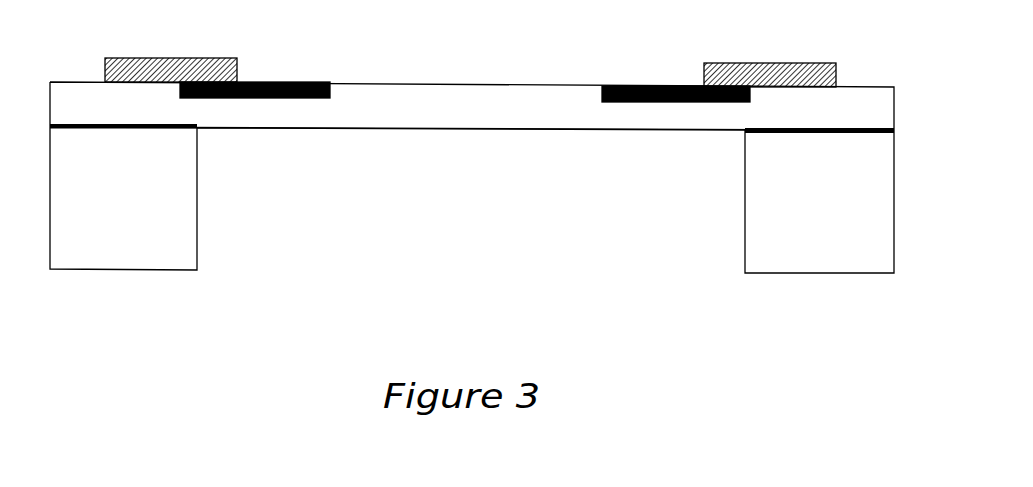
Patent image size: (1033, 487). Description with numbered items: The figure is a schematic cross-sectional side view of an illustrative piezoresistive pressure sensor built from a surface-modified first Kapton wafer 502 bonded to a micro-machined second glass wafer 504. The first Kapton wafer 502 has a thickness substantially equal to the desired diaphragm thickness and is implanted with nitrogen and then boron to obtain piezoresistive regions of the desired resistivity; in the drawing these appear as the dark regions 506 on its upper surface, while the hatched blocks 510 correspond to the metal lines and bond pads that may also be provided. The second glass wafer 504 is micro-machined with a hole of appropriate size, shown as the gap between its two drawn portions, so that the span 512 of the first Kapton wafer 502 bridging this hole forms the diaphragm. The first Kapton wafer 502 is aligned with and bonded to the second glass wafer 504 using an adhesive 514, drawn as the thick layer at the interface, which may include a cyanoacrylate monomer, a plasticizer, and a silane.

The first Kapton wafer 502 is at (858, 93).
The second glass wafer 504 is at (760, 217).
The electrodes 506 is at (267, 82).
The bond pads 510 is at (765, 67).
The membrane span over cavity 512 is at (505, 120).
The adhesive 514 is at (165, 127).